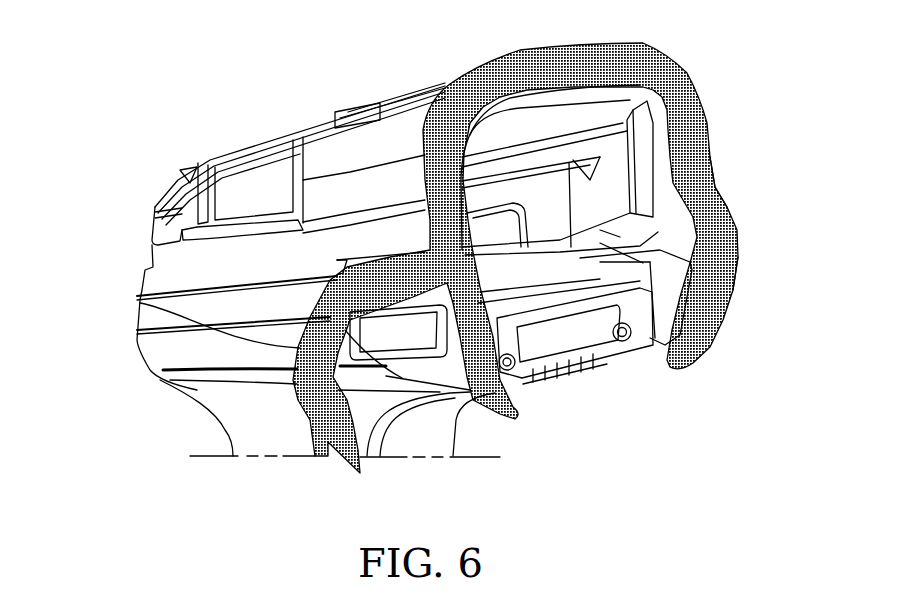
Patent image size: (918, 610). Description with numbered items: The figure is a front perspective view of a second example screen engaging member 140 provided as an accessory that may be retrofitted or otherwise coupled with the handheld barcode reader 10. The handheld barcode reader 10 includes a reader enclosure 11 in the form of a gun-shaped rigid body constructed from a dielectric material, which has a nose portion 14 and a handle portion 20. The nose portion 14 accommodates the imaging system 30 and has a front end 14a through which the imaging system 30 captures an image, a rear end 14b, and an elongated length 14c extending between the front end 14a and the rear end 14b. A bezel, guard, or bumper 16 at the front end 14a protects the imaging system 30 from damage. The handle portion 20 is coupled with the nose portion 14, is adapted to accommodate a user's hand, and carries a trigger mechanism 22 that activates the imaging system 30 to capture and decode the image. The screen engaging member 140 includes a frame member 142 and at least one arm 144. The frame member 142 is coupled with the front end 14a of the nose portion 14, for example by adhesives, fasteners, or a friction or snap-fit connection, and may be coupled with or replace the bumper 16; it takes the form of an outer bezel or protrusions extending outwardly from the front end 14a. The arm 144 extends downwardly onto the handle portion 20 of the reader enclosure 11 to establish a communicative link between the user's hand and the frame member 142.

The handheld barcode reader 10 is at (104, 78).
The reader enclosure 11 is at (148, 362).
The nose portion 14 is at (287, 125).
The front end 14a is at (728, 133).
The rear end 14b is at (133, 239).
The elongated length 14c is at (405, 80).
The bumper 16 is at (662, 140).
The handle portion 20 is at (233, 407).
The trigger mechanism 22 is at (437, 423).
The imaging system 30 is at (543, 207).
The screen engaging member 140 is at (737, 285).
The frame member 142 is at (736, 210).
The arm 144 is at (137, 300).